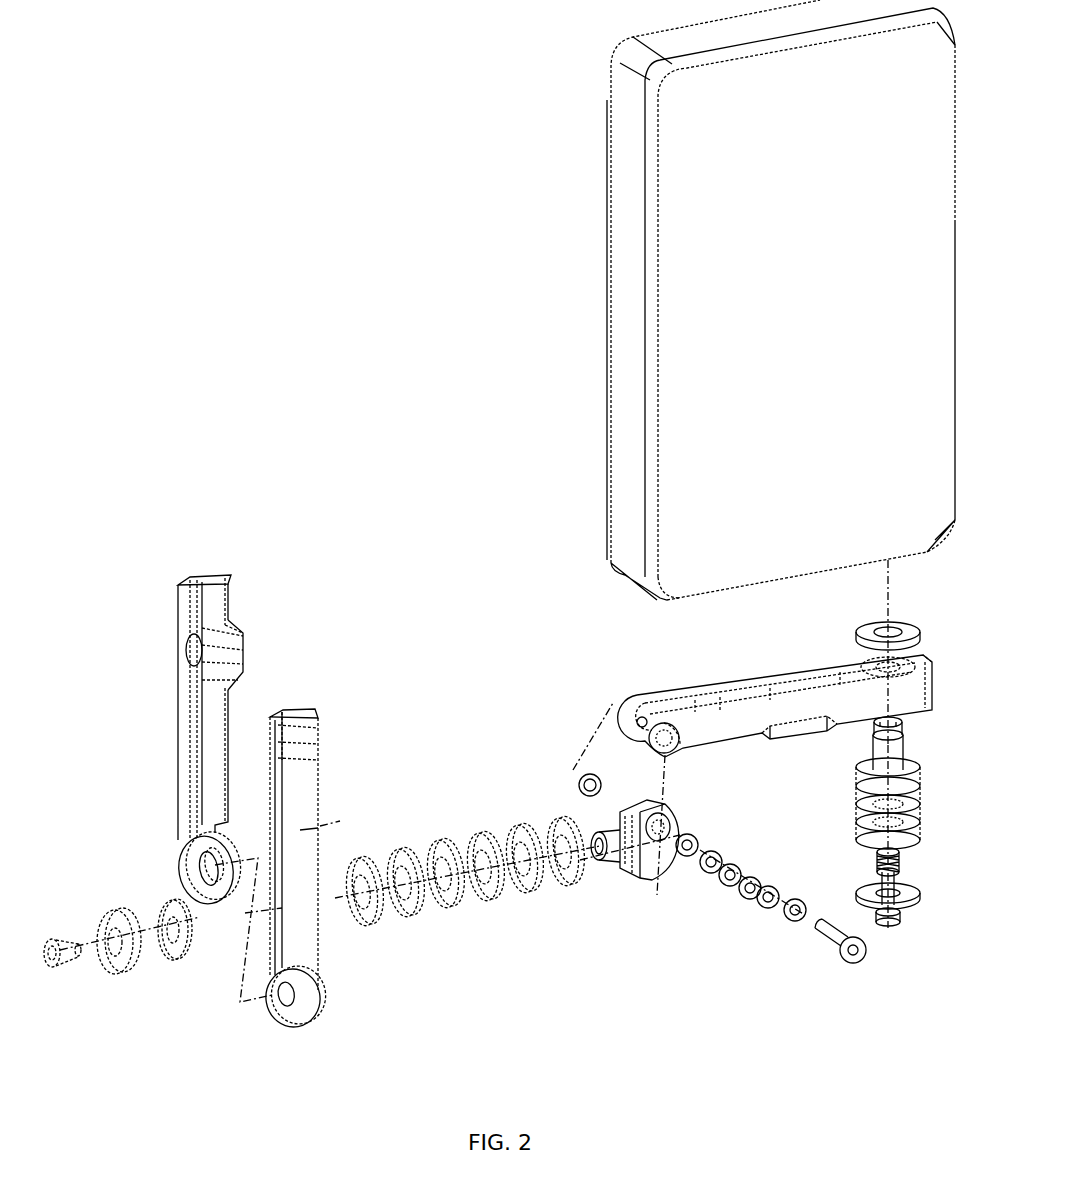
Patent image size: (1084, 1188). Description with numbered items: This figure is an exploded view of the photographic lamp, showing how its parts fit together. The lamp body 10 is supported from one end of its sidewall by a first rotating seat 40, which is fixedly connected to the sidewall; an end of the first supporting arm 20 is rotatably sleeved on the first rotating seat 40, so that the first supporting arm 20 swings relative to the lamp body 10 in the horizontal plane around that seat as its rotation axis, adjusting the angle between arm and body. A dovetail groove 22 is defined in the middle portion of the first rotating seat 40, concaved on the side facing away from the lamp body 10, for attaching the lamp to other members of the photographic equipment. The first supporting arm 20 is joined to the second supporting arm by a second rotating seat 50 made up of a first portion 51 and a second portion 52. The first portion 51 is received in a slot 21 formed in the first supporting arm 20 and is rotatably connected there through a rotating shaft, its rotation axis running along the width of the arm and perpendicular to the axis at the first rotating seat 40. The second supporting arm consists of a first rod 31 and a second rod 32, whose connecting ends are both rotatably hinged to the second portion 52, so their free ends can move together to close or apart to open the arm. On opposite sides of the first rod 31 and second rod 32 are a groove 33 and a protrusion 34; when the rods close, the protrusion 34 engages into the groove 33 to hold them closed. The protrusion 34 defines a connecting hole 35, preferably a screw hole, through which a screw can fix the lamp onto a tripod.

The lamp body 10 is at (683, 285).
The first supporting arm 20 is at (716, 697).
The slot 21 is at (647, 693).
The dovetail groove 22 is at (791, 727).
The first rod 31 is at (183, 709).
The second rod 32 is at (302, 830).
The groove 33 is at (332, 852).
The protrusion 34 is at (230, 650).
The connecting hole 35 is at (185, 650).
The first rotating seat 40 is at (890, 930).
The second rotating seat 50 is at (655, 884).
The first portion 51 is at (658, 862).
The second portion 52 is at (617, 852).